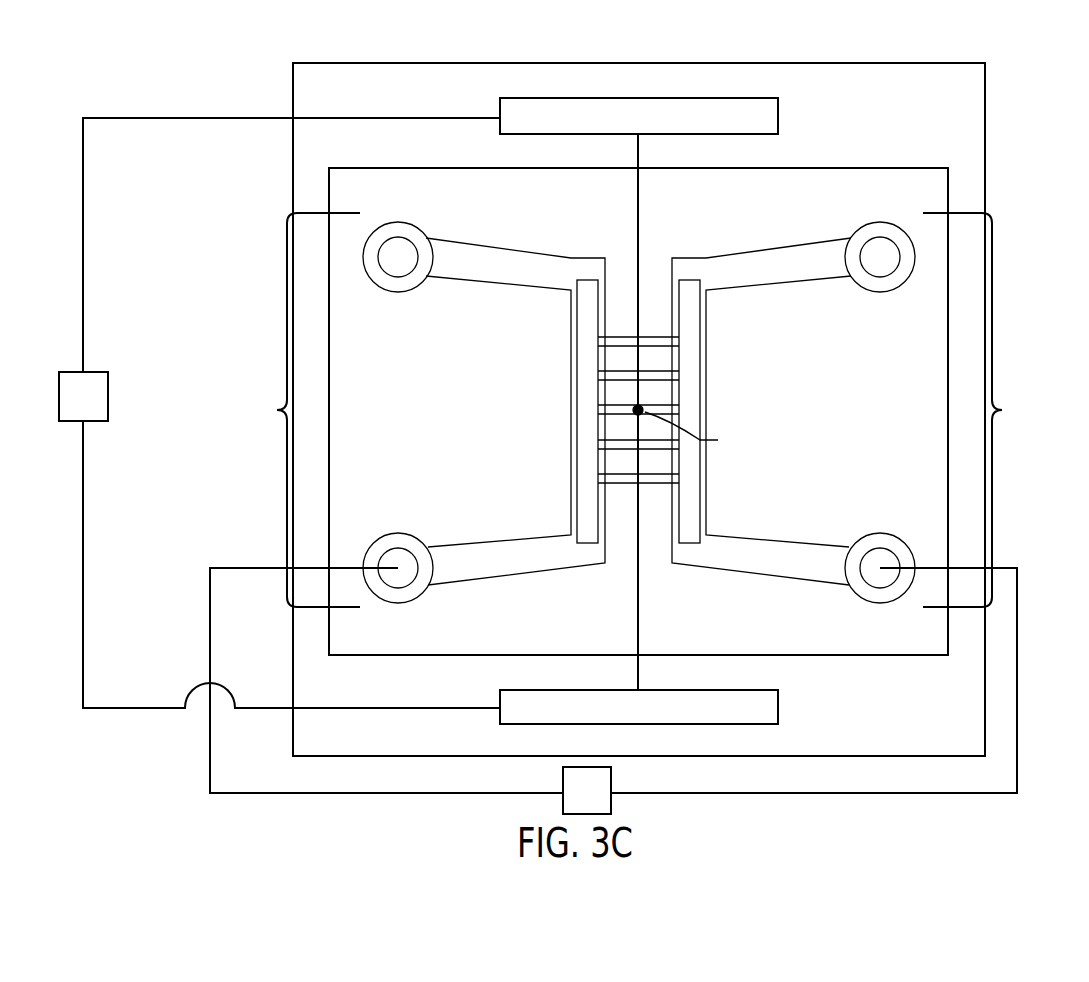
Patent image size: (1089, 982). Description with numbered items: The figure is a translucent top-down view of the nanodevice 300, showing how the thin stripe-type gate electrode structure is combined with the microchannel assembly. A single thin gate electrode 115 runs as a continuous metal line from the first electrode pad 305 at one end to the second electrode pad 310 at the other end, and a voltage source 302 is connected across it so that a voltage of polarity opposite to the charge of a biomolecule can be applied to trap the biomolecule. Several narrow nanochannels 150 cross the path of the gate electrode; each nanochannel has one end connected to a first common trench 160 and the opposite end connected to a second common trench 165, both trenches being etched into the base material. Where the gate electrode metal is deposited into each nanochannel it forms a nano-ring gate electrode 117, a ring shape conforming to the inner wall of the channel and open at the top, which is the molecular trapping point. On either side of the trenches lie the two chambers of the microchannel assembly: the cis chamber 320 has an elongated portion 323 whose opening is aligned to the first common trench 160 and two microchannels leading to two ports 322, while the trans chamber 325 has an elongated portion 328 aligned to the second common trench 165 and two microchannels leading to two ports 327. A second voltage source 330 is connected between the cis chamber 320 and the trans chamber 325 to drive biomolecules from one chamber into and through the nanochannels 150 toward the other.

The nanodevice 300 is at (1032, 140).
The second electrode pad 310 is at (767, 118).
The first electrode pad 305 is at (778, 706).
The single thin gate electrode 115 is at (640, 162).
The voltage source 302 is at (108, 401).
The voltage source 330 is at (611, 783).
The cis chamber 320 is at (301, 410).
The trans chamber 325 is at (981, 410).
The ports 322 is at (395, 222).
The ports 327 is at (888, 244).
The elongated portion 323 is at (562, 421).
The elongated portion 328 is at (718, 417).
The first common trench 160 is at (588, 292).
The second common trench 165 is at (692, 292).
The nano-ring gate electrode 117 is at (644, 452).
The nanochannels 150 is at (615, 445).